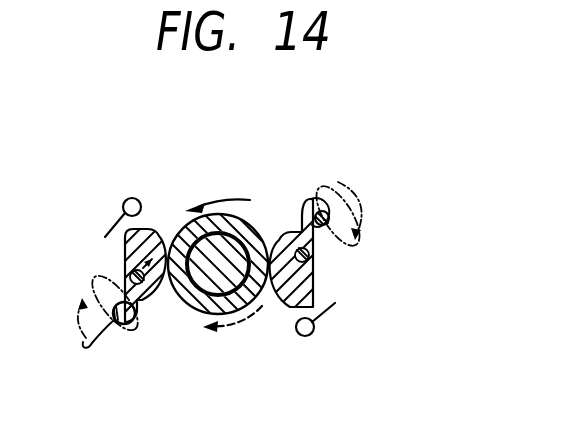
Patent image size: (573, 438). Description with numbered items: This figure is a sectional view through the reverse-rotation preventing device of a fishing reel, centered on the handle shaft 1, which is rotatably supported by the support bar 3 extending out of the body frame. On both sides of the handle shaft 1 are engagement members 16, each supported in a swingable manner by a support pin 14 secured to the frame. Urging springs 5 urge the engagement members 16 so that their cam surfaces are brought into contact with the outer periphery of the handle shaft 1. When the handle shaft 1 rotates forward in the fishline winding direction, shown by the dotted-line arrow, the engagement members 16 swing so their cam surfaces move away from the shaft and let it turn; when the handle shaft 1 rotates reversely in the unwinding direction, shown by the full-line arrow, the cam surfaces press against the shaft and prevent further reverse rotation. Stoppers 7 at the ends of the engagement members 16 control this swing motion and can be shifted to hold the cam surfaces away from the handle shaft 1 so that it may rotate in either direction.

The handle shaft 1 is at (244, 228).
The support bar 3 is at (193, 302).
The urging spring 5 is at (142, 228).
The stopper 7 is at (104, 347).
The support pin 14 is at (125, 272).
The engagement member 16 is at (152, 306).